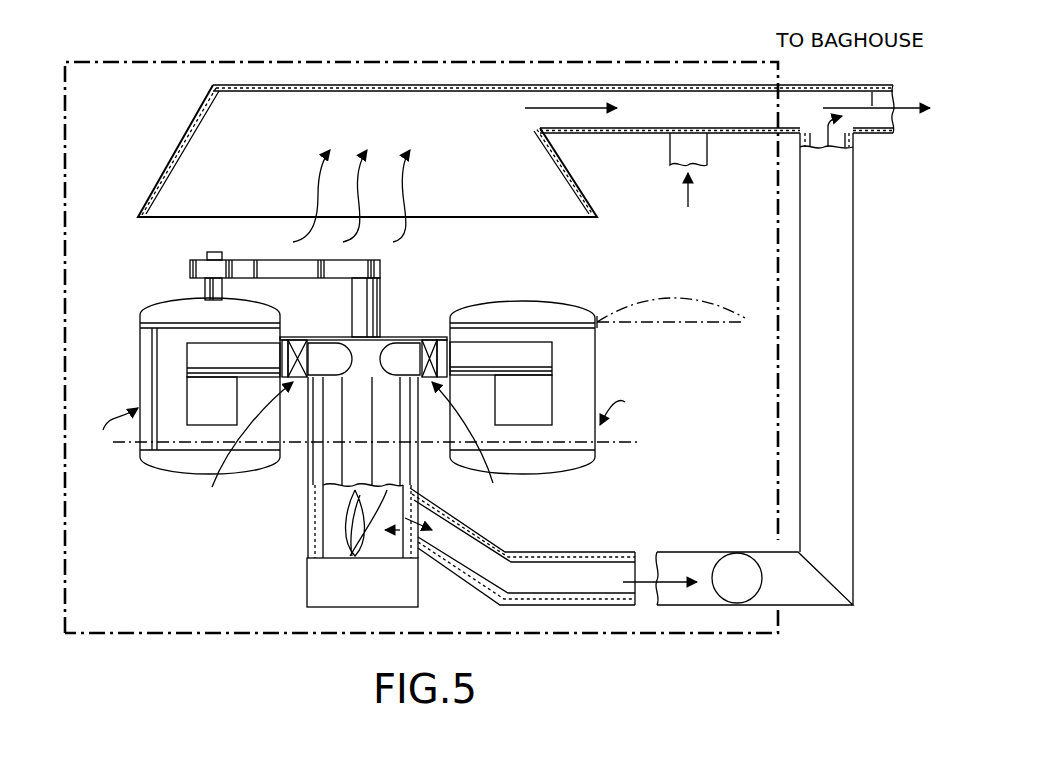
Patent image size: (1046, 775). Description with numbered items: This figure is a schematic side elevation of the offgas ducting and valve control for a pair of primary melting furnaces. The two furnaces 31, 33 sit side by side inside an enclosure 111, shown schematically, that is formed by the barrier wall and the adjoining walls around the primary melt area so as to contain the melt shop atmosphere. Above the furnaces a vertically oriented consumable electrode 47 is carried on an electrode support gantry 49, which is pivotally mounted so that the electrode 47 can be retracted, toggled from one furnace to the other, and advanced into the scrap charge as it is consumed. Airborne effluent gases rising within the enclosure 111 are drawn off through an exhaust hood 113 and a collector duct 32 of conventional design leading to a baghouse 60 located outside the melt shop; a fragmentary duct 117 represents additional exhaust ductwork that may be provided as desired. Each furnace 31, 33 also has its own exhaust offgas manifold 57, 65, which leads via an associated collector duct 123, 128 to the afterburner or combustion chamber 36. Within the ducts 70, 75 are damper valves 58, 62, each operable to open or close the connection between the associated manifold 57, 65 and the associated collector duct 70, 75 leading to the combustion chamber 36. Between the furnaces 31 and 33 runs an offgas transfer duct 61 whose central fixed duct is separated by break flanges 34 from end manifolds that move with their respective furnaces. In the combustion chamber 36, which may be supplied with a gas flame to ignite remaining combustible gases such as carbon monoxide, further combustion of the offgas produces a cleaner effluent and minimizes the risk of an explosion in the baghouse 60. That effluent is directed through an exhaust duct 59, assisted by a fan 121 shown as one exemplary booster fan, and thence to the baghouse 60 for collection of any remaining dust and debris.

The enclosure 111 is at (443, 62).
The exhaust hood 113 is at (582, 183).
The baghouse 60 is at (880, 88).
The fragmentary duct 117 is at (670, 150).
The collector duct 32 is at (743, 135).
The electrode support gantry 49 is at (235, 260).
The consumable electrode 47 is at (207, 252).
The offgas transfer duct 61 is at (390, 337).
The break flanges 34 is at (293, 340).
The exhaust offgas manifold 57 is at (193, 357).
The furnace 31 is at (111, 407).
The collector duct 123 is at (242, 429).
The damper valve 58 is at (297, 350).
The collector duct 70 is at (323, 365).
The collector duct 75 is at (403, 367).
The damper valve 62 is at (428, 343).
The collector duct 128 is at (484, 446).
The furnace 33 is at (553, 387).
The exhaust offgas manifold 65 is at (543, 355).
The combustion chamber 36 is at (308, 510).
The exhaust duct 59 is at (577, 552).
The fan 121 is at (737, 552).